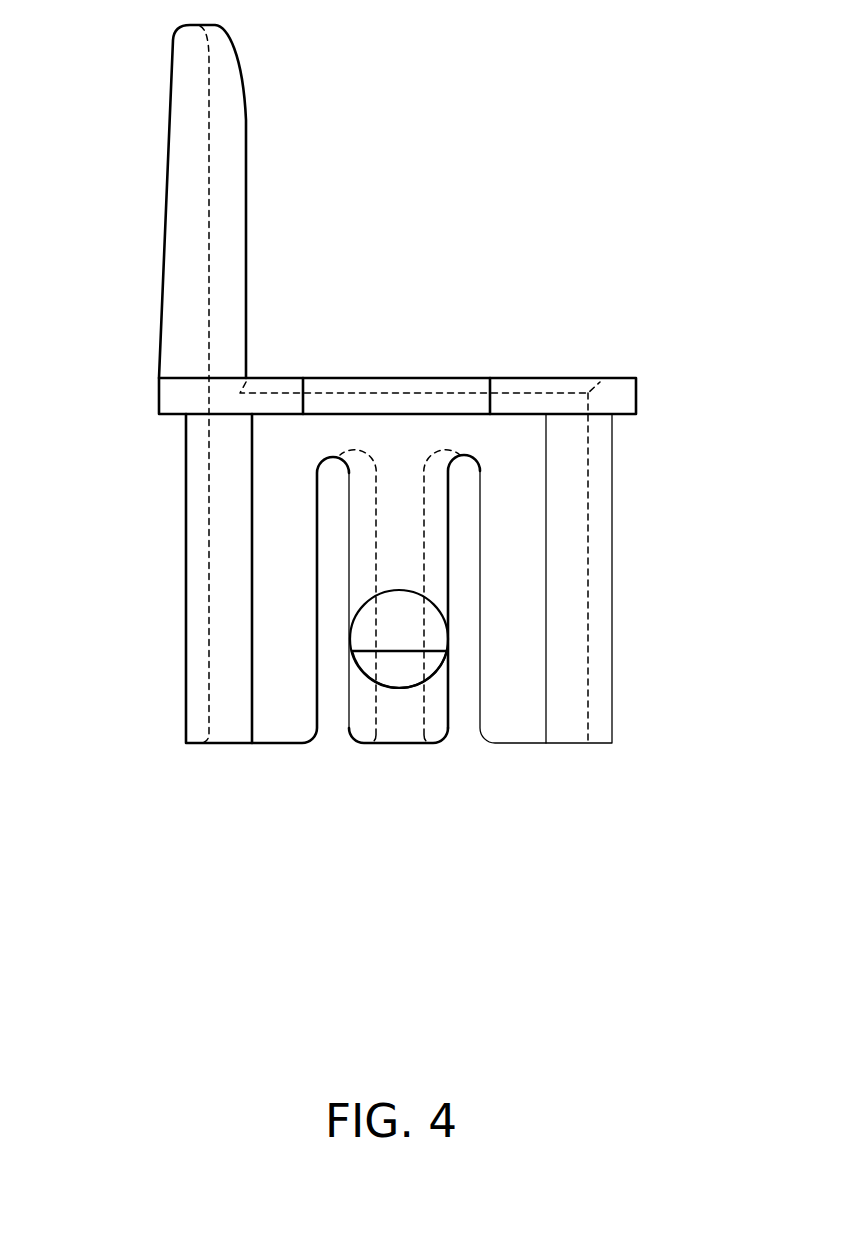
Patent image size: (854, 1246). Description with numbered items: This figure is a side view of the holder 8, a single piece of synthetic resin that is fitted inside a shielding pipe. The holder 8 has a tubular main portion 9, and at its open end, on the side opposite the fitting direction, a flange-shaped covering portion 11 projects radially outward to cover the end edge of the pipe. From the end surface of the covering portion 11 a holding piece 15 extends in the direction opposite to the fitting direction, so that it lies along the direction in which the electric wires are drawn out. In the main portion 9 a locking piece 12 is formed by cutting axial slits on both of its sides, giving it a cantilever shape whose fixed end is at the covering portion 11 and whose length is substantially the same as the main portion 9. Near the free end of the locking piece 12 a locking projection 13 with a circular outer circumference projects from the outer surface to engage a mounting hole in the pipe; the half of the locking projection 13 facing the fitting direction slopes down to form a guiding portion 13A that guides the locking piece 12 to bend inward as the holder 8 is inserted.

The holder 8 is at (318, 153).
The holding piece 15 is at (185, 162).
The covering portion 11 is at (180, 402).
The main portion 9 is at (598, 538).
The locking piece 12 is at (434, 727).
The locking projection 13 is at (398, 630).
The guiding portion 13A is at (368, 673).